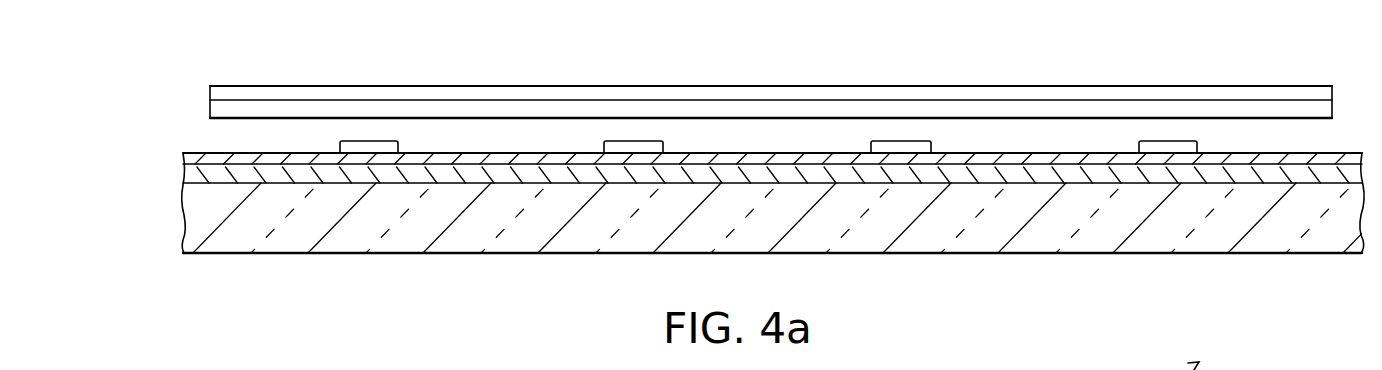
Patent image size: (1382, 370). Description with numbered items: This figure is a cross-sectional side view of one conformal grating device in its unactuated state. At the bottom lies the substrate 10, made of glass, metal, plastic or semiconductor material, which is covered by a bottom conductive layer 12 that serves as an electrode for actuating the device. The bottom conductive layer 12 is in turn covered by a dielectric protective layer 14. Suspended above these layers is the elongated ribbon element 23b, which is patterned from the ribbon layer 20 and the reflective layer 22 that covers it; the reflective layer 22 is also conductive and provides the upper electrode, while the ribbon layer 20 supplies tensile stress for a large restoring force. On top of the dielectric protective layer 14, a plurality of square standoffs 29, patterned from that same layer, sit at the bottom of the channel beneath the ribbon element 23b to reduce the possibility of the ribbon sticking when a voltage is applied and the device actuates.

The substrate 10 is at (193, 225).
The bottom conductive layer 12 is at (183, 168).
The dielectric protective layer 14 is at (183, 160).
The ribbon layer 20 is at (727, 62).
The reflective layer 22 is at (253, 87).
The elongated ribbon element 23b is at (463, 86).
The standoffs 29 is at (362, 140).